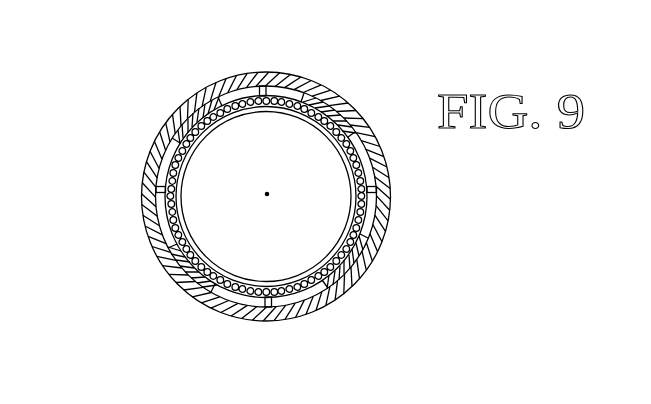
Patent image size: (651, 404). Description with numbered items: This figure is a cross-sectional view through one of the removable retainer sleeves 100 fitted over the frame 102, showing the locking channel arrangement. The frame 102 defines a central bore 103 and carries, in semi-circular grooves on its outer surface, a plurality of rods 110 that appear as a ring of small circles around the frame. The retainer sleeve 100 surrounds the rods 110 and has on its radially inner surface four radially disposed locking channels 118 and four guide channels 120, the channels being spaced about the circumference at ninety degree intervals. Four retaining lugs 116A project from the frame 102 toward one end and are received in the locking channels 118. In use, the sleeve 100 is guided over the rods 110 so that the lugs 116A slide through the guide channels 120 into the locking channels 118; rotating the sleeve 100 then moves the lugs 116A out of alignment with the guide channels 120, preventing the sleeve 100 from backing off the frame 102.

The removable retainer sleeve 100 is at (290, 70).
The frame 102 is at (263, 115).
The bore 103 is at (330, 198).
The rods 110 is at (380, 150).
The retaining lugs 116A is at (213, 100).
The locking channel 118 is at (312, 298).
The guide channel 120 is at (262, 86).